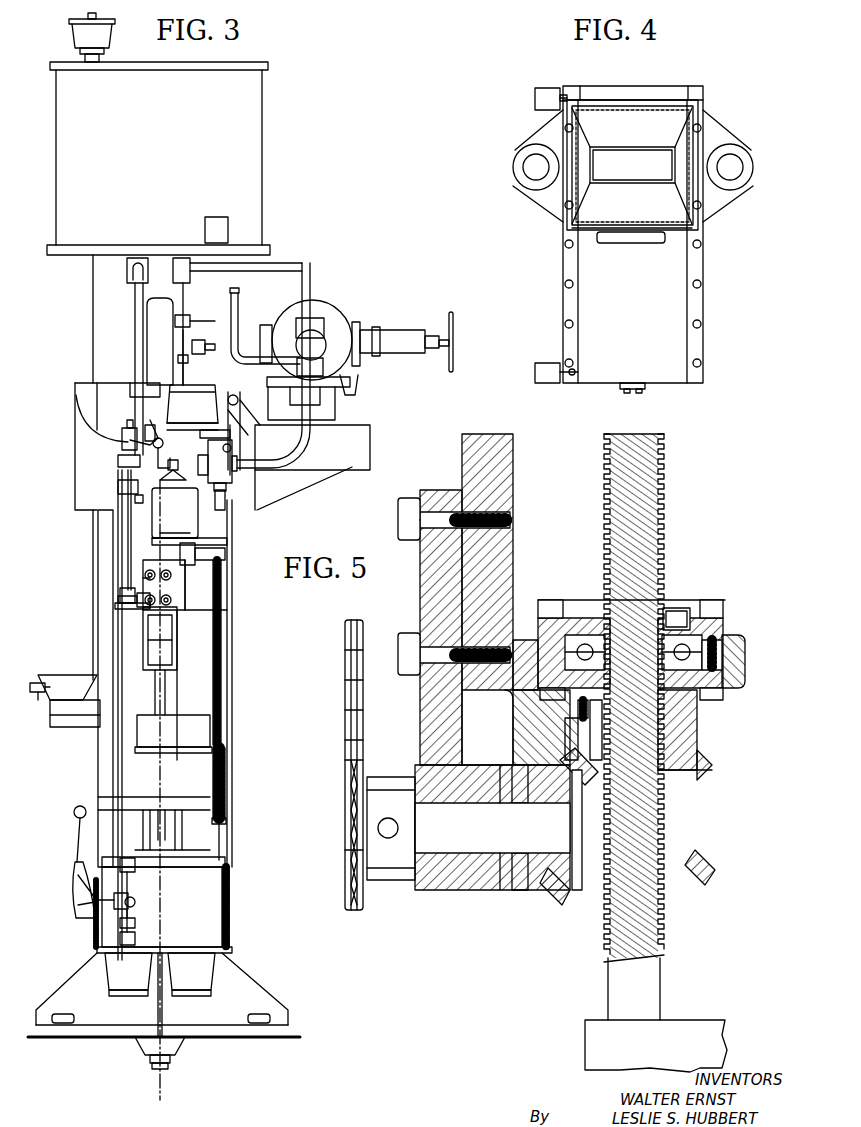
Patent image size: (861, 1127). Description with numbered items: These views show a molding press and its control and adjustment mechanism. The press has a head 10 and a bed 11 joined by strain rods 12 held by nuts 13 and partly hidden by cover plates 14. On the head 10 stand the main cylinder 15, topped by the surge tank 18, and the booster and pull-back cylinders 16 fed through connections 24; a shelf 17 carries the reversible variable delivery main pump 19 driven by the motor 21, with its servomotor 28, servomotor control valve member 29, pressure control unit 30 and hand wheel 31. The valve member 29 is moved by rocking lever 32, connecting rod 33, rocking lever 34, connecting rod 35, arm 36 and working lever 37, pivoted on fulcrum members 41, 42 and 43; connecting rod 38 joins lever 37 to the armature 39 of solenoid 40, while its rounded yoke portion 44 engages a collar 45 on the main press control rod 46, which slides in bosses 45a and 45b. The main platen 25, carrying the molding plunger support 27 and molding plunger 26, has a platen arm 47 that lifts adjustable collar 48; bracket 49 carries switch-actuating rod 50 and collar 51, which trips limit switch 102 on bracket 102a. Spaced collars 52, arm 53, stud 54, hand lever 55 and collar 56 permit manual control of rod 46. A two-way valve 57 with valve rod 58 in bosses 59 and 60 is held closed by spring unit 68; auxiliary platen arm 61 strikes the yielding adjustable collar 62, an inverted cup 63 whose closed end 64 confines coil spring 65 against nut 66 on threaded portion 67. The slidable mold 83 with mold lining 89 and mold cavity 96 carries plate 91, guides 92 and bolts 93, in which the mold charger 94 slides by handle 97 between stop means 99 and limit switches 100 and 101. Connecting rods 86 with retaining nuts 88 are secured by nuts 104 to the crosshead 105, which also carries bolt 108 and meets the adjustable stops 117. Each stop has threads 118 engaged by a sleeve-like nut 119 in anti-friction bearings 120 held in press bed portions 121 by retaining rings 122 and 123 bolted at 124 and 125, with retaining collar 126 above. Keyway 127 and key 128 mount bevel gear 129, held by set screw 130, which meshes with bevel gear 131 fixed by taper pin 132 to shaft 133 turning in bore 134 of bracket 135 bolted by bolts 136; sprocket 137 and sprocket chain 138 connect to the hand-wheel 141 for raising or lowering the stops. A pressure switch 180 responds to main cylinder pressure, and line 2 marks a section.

In FIG. 3, the surge tank 18 is at (252, 134).
In FIG. 3, the pressure switch 180 is at (211, 218).
In FIG. 3, the main cylinder 15 is at (93, 284).
In FIG. 3, the connections 24 is at (168, 296).
In FIG. 3, the booster and pull-back cylinders 16 is at (170, 352).
In FIG. 3, the servomotor control valve member 29 is at (192, 345).
In FIG. 3, the rocking lever 32 is at (198, 360).
In FIG. 3, the fulcrum member 41 is at (180, 362).
In FIG. 3, the servomotor 28 is at (249, 340).
In FIG. 3, the reversible variable delivery main pump 19 is at (322, 316).
In FIG. 3, the pressure control unit 30 is at (403, 348).
In FIG. 3, the hand wheel 31 is at (453, 357).
In FIG. 3, the motor 21 is at (352, 372).
In FIG. 3, the shelf 17 is at (366, 448).
In FIG. 3, the nuts 13 is at (118, 393).
In FIG. 3, the head 10 is at (105, 458).
In FIG. 3, the connecting rod 33 is at (192, 403).
In FIG. 3, the connecting rod 35 is at (212, 428).
In FIG. 3, the rocking lever 34 is at (238, 398).
In FIG. 3, the fulcrum member 42 is at (244, 410).
In FIG. 3, the arm 36 is at (153, 425).
In FIG. 3, the working lever 37 is at (148, 437).
In FIG. 3, the connecting rod 38 is at (172, 465).
In FIG. 3, the spring unit 68 is at (232, 434).
In FIG. 3, the rounded yoke portion 44 is at (120, 440).
In FIG. 3, the collar 45 is at (118, 461).
In FIG. 3, the two-way valve 57 is at (224, 472).
In FIG. 3, the fulcrum member 43 is at (173, 470).
In FIG. 3, the boss 45a is at (118, 485).
In FIG. 3, the switch-actuating collar 51 is at (135, 499).
In FIG. 3, the armature 39 is at (175, 513).
In FIG. 3, the solenoid 40 is at (177, 529).
In FIG. 3, the boss 59 is at (226, 505).
In FIG. 3, the valve rod 58 is at (227, 543).
In FIG. 3, the bracket 102a is at (196, 555).
In FIG. 3, the auxiliary platen arm 61 is at (208, 566).
In FIG. 3, the limit switch 102 is at (172, 585).
In FIG. 3, the switch-actuating rod 50 is at (143, 578).
In FIG. 3, the adjustable collar 48 is at (120, 594).
In FIG. 3, the section line 2 is at (62, 596).
In FIG. 3, the platen arm 47 is at (118, 600).
In FIG. 3, the bracket 49 is at (115, 607).
In FIG. 3, the main press control rod 46 is at (137, 620).
In FIG. 3, the main platen 25 is at (200, 600).
In FIG. 3, the strain rods 12 is at (112, 640).
In FIG. 3, the cover plates 14 is at (98, 662).
In FIG. 3, the molding plunger support 27 is at (152, 612).
In FIG. 3, the molding plunger 26 is at (170, 650).
In FIG. 3, the mold charger 94 is at (70, 696).
In FIG. 4, the mold charger 94 is at (594, 240).
In FIG. 3, the handle 97 is at (39, 702).
In FIG. 4, the handle 97 is at (640, 244).
In FIG. 3, the slidable mold 83 is at (172, 722).
In FIG. 3, the threaded portion 67 is at (222, 726).
In FIG. 3, the closed end 64 is at (224, 750).
In FIG. 3, the yielding adjustable collar 62 is at (230, 768).
In FIG. 3, the inverted cup 63 is at (226, 786).
In FIG. 3, the coil spring 65 is at (226, 806).
In FIG. 3, the nut 66 is at (226, 822).
In FIG. 3, the connecting rods 86 is at (165, 822).
In FIG. 4, the connecting rods 86 is at (528, 165).
In FIG. 3, the boss 60 is at (225, 860).
In FIG. 3, the bed 11 is at (205, 880).
In FIG. 5, the bed 11 is at (470, 452).
In FIG. 3, the boss 45b is at (135, 866).
In FIG. 3, the spaced collars 52 is at (134, 900).
In FIG. 3, the stud 54 is at (111, 893).
In FIG. 3, the arm 53 is at (116, 921).
In FIG. 3, the collar 56 is at (135, 923).
In FIG. 3, the hand lever 55 is at (78, 842).
In FIG. 3, the hand-wheel 141 is at (75, 892).
In FIG. 3, the sprocket chain 138 is at (230, 912).
In FIG. 5, the sprocket chain 138 is at (345, 700).
In FIG. 3, the nuts 104 is at (172, 1058).
In FIG. 3, the bolt 108 is at (155, 1068).
In FIG. 4, the plate 91 is at (665, 382).
In FIG. 4, the parallel guides 92 is at (566, 268).
In FIG. 4, the bolts 93 is at (700, 283).
In FIG. 4, the mold lining 89 is at (596, 186).
In FIG. 4, the mold cavity 96 is at (638, 170).
In FIG. 4, the retaining nuts 88 is at (518, 181).
In FIG. 4, the limit switch 100 is at (540, 96).
In FIG. 4, the limit switch 101 is at (540, 380).
In FIG. 4, the stop means 99 is at (625, 386).
In FIG. 5, the bolts 136 is at (400, 520).
In FIG. 5, the bracket 135 is at (428, 596).
In FIG. 5, the retaining ring 122 is at (730, 610).
In FIG. 5, the bolts 124 is at (550, 604).
In FIG. 5, the retaining collar 126 is at (676, 612).
In FIG. 5, the anti-friction bearings 120 is at (690, 650).
In FIG. 5, the press bed portions 121 is at (745, 652).
In FIG. 5, the retaining ring 123 is at (736, 679).
In FIG. 5, the bolts 125 is at (724, 694).
In FIG. 5, the sleeve-like nut 119 is at (680, 714).
In FIG. 5, the bevel gear 129 is at (697, 735).
In FIG. 5, the set screw 130 is at (578, 716).
In FIG. 5, the keyway 127 is at (590, 738).
In FIG. 5, the key 128 is at (565, 752).
In FIG. 5, the taper pin 132 is at (520, 892).
In FIG. 5, the shaft 133 is at (455, 888).
In FIG. 5, the bevel gear 131 is at (552, 893).
In FIG. 5, the bore 134 is at (420, 882).
In FIG. 5, the sprocket 137 is at (345, 850).
In FIG. 5, the threads 118 is at (660, 851).
In FIG. 5, the adjustable stops 117 is at (608, 983).
In FIG. 5, the crosshead 105 is at (592, 1050).